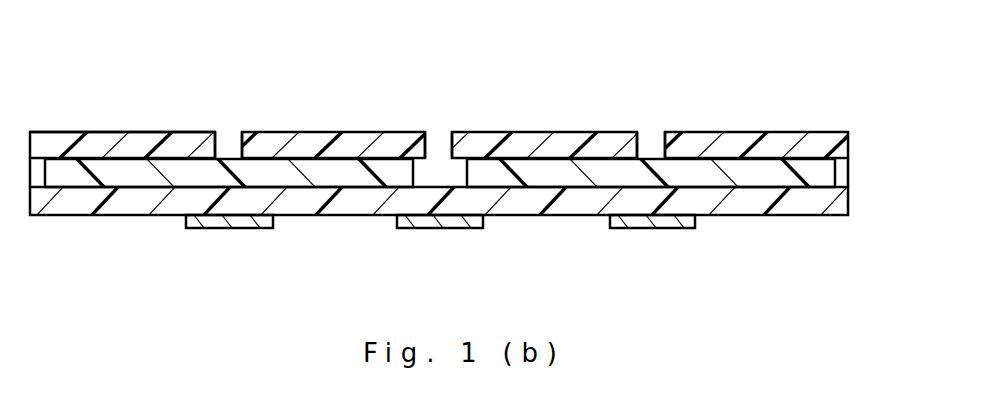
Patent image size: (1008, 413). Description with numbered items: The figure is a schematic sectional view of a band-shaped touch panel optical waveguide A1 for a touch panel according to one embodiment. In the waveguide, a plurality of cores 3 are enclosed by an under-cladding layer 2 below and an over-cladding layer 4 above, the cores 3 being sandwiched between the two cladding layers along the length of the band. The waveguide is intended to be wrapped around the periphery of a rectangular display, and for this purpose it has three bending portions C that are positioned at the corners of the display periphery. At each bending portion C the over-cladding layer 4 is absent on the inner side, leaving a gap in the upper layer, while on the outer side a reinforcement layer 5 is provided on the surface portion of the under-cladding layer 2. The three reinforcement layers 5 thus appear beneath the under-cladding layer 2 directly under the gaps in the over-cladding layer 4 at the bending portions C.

The under-cladding layer 2 is at (838, 200).
The cores 3 is at (820, 170).
The over-cladding layer 4 is at (828, 137).
The reinforcement layers 5 is at (230, 230).
The touch panel optical waveguide A1 is at (160, 120).
The bending portions C is at (230, 118).